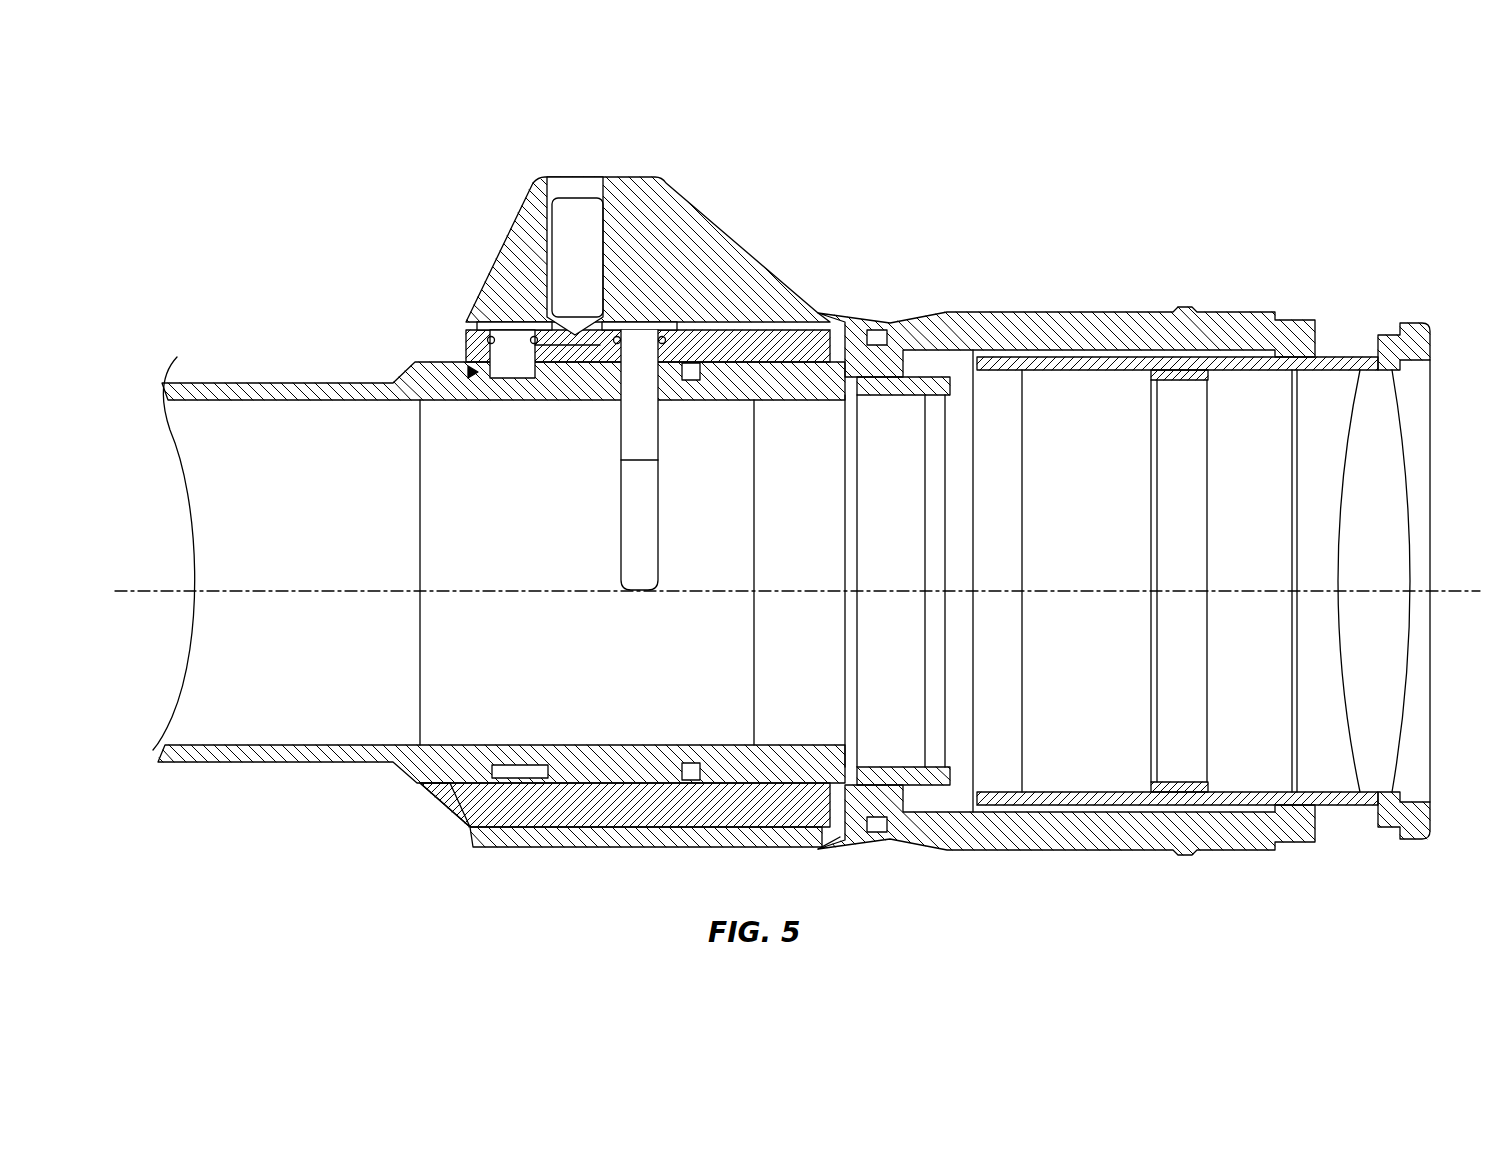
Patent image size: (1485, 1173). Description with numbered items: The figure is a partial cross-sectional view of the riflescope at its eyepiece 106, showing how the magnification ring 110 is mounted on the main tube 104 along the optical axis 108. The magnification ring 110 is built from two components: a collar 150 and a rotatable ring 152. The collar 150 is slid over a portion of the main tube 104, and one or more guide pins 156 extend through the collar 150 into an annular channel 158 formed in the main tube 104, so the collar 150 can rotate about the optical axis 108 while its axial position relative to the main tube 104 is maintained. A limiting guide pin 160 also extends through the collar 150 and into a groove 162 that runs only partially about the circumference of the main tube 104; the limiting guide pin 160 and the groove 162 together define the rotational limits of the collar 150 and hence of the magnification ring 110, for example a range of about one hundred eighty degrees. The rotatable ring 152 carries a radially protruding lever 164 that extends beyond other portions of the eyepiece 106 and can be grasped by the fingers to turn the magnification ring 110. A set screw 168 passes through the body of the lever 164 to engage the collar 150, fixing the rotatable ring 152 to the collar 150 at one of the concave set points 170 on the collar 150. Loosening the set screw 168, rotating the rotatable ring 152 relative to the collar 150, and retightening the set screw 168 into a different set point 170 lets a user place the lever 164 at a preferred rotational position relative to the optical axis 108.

The main tube 104 is at (353, 383).
The eyepiece 106 is at (978, 228).
The optical axis 108 is at (177, 570).
The magnification ring 110 is at (478, 845).
The collar 150 is at (830, 345).
The rotatable ring 152 is at (462, 322).
The guide pins 156 is at (478, 318).
The annular channel 158 is at (470, 372).
The limiting guide pin 160 is at (640, 322).
The groove 162 is at (660, 472).
The lever 164 is at (509, 235).
The set screw 168 is at (577, 197).
The set points 170 is at (560, 360).